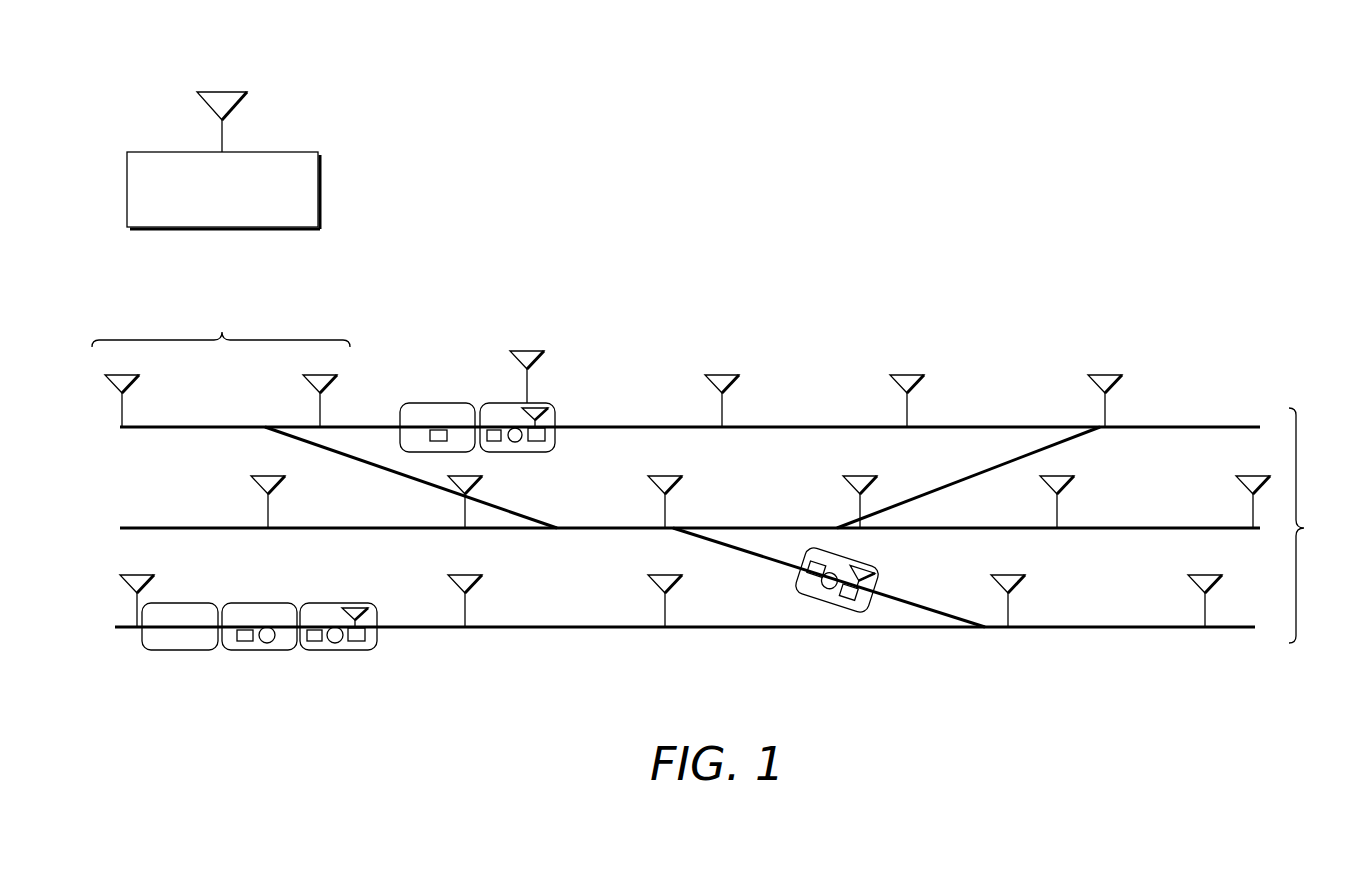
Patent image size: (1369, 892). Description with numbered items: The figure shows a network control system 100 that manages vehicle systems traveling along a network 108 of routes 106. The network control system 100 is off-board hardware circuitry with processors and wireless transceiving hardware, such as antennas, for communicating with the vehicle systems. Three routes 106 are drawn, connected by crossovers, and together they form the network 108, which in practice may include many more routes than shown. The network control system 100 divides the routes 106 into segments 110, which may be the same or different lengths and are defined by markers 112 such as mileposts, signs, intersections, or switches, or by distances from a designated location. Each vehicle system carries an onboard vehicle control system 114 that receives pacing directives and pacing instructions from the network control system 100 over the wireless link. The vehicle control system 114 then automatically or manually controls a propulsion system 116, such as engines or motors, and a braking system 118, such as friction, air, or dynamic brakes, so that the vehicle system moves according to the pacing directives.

The network control system 100 is at (273, 151).
The route 106 is at (802, 425).
The network 108 is at (1318, 525).
The segment 110 is at (221, 324).
The marker 112 is at (1068, 360).
The vehicle control system 114 is at (538, 443).
The propulsion system 116 is at (827, 595).
The braking system 118 is at (247, 643).